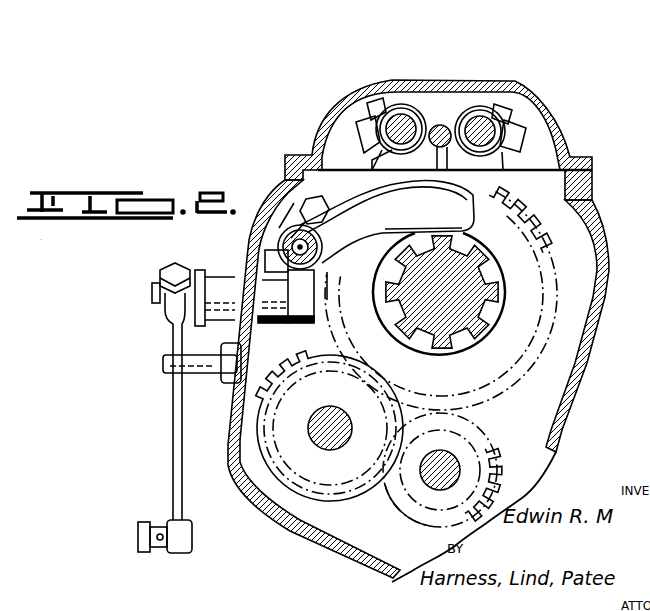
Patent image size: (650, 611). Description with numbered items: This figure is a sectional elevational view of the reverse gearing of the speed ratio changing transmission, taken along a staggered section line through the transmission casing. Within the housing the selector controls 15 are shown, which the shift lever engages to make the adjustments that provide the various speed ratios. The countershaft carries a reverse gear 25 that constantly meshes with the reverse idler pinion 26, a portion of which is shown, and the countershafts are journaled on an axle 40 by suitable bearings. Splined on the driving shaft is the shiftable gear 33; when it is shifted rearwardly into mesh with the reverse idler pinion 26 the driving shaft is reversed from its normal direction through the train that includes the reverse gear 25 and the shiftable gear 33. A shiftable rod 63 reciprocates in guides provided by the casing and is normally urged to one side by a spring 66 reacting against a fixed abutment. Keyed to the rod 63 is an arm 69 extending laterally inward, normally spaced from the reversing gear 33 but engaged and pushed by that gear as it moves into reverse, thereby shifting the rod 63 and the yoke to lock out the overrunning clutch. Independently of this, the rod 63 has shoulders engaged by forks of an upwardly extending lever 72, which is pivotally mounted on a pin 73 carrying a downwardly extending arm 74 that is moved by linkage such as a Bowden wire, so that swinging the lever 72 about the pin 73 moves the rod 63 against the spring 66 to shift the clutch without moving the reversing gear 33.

The selector controls 15 is at (471, 120).
The reverse gear 25 is at (480, 441).
The reverse idler pinion 26 is at (298, 366).
The shiftable gear 33 is at (520, 228).
The axle 40 is at (440, 473).
The shiftable rod 63 is at (312, 239).
The spring 66 is at (278, 256).
The arm 69 is at (450, 214).
The lever 72 is at (318, 276).
The pin 73 is at (152, 298).
The downwardly extending arm 74 is at (172, 428).